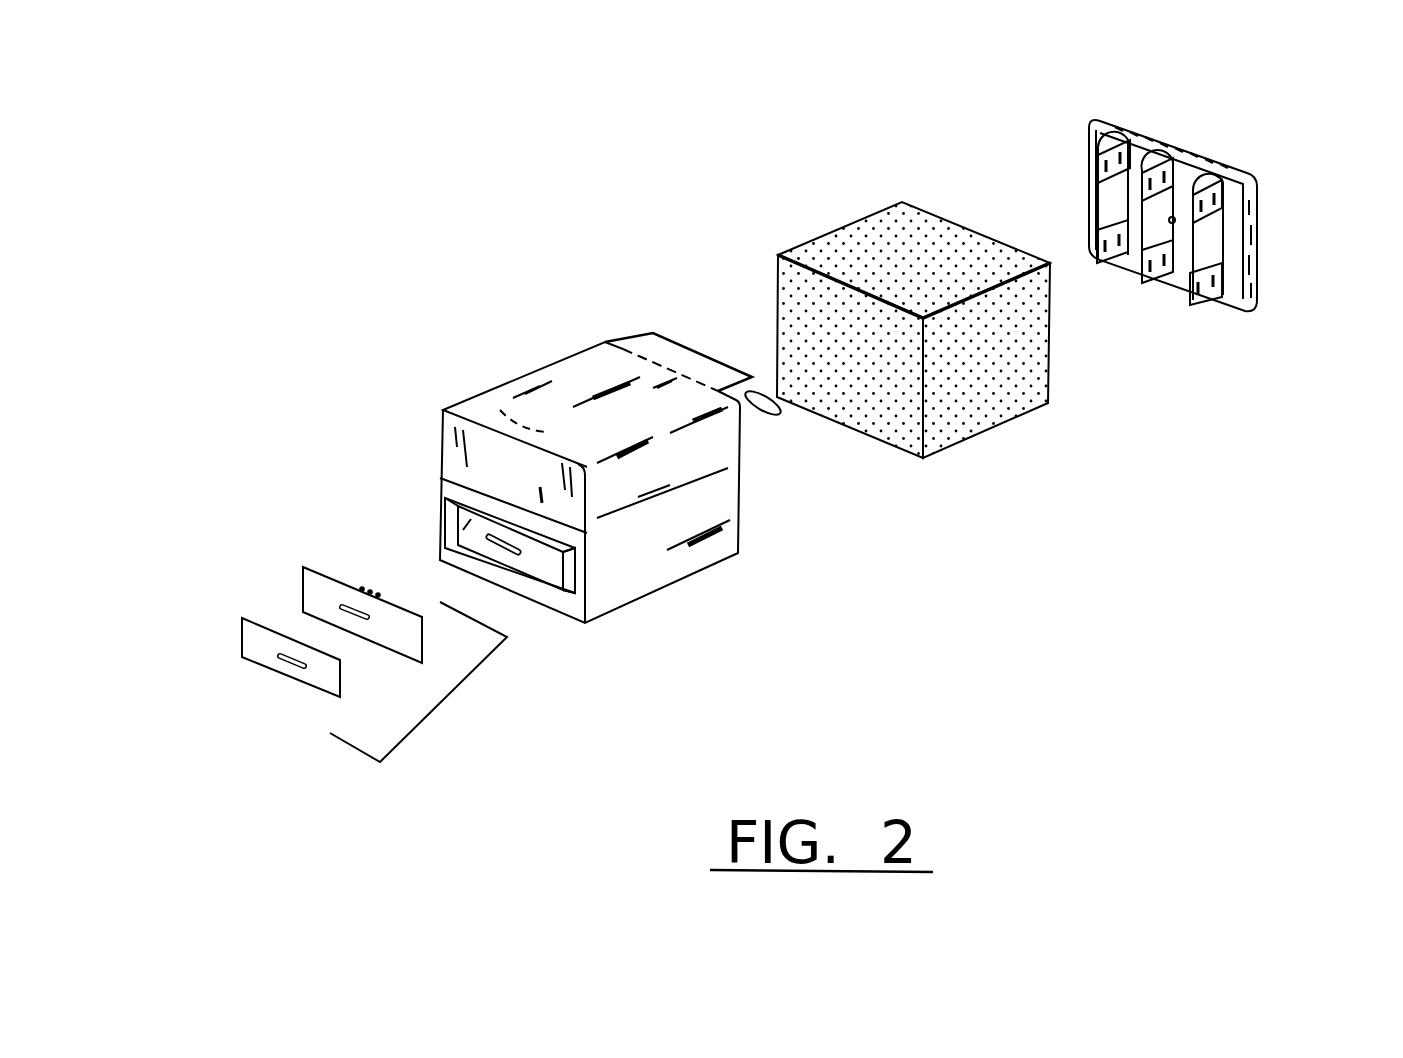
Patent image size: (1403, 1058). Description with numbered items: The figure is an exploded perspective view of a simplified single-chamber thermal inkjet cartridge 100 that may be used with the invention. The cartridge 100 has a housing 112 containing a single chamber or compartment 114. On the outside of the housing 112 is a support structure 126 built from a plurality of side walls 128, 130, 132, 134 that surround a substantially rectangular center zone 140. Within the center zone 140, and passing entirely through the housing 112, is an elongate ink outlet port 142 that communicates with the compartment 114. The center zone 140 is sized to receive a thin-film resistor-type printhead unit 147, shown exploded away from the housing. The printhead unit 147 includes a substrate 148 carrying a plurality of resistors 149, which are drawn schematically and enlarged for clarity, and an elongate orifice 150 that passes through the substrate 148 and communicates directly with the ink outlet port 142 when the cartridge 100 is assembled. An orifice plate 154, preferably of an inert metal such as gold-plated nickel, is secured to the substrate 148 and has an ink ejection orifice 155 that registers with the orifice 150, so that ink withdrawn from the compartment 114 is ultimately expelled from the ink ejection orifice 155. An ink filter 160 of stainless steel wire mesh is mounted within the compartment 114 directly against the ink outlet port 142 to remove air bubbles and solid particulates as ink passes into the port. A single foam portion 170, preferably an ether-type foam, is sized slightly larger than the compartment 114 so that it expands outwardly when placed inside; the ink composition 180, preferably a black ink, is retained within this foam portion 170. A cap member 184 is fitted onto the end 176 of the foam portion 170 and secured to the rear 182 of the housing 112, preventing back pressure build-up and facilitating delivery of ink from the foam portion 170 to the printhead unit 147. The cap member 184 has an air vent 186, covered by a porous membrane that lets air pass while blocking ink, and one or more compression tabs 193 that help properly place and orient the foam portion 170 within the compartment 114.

The single-chamber cartridge 100 is at (708, 590).
The housing 112 is at (738, 553).
The compartment 114 is at (507, 410).
The support structure 126 is at (587, 543).
The side wall 128 is at (445, 498).
The side wall 130 is at (445, 527).
The side wall 132 is at (550, 597).
The side wall 134 is at (573, 575).
The center zone 140 is at (443, 546).
The ink outlet port 142 is at (505, 553).
The printhead unit 147 is at (438, 705).
The substrate 148 is at (302, 567).
The resistors 149 is at (360, 588).
The orifice 150 is at (340, 606).
The orifice plate 154 is at (242, 633).
The ink ejection orifice 155 is at (279, 655).
The ink filter 160 is at (775, 410).
The foam portion 170 is at (863, 242).
The end of foam portion 176 is at (953, 222).
The ink composition 180 is at (1002, 392).
The rear of housing 182 is at (610, 342).
The cap member 184 is at (1162, 130).
The air vent 186 is at (1178, 221).
The compression tabs 193 is at (1123, 270).